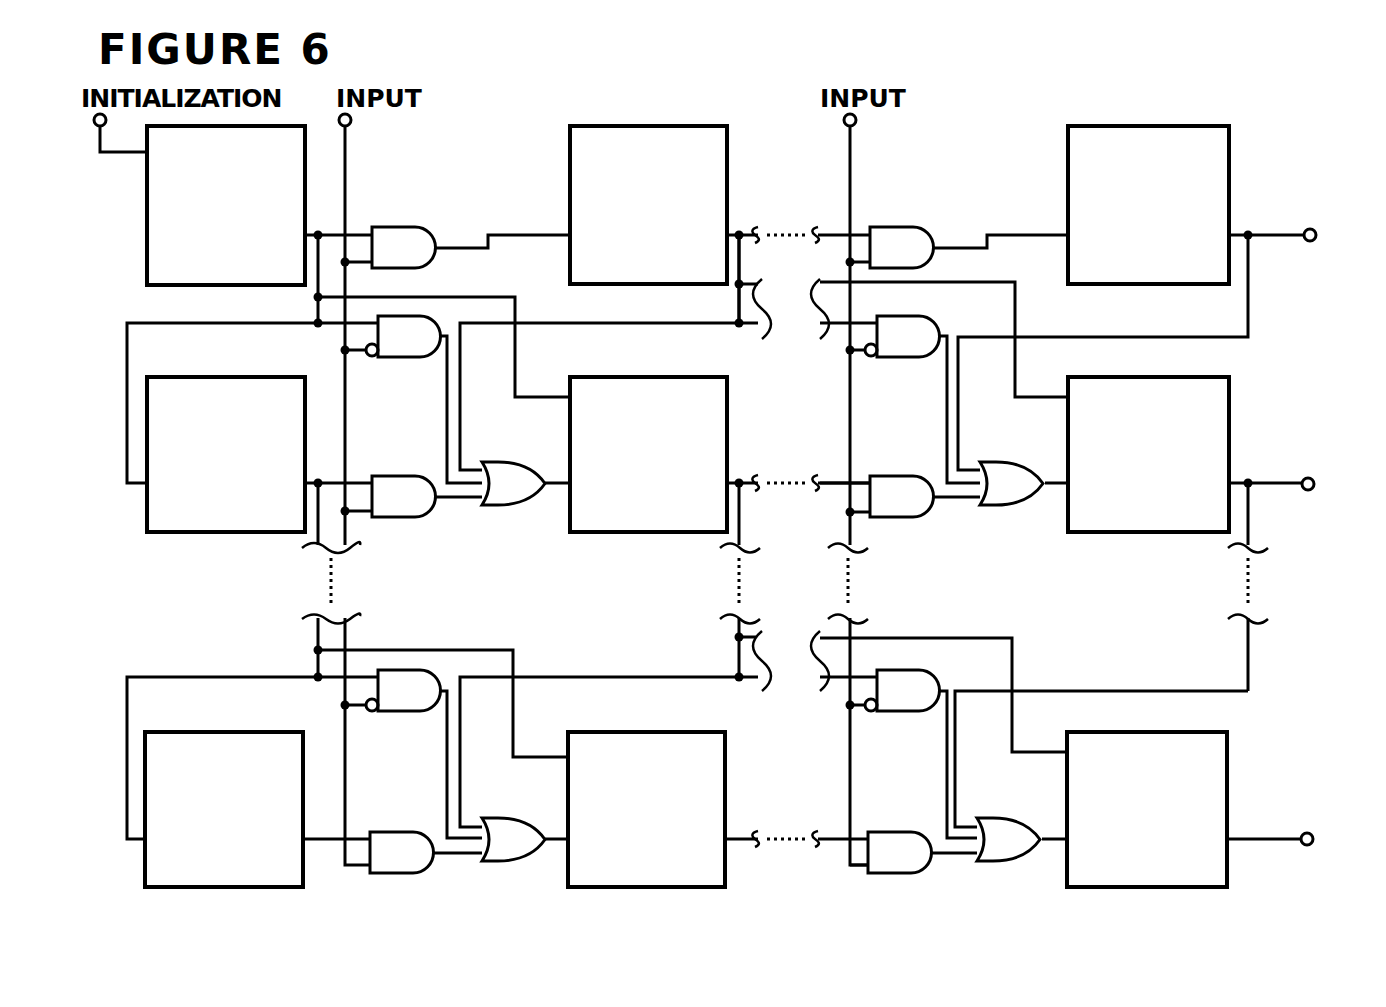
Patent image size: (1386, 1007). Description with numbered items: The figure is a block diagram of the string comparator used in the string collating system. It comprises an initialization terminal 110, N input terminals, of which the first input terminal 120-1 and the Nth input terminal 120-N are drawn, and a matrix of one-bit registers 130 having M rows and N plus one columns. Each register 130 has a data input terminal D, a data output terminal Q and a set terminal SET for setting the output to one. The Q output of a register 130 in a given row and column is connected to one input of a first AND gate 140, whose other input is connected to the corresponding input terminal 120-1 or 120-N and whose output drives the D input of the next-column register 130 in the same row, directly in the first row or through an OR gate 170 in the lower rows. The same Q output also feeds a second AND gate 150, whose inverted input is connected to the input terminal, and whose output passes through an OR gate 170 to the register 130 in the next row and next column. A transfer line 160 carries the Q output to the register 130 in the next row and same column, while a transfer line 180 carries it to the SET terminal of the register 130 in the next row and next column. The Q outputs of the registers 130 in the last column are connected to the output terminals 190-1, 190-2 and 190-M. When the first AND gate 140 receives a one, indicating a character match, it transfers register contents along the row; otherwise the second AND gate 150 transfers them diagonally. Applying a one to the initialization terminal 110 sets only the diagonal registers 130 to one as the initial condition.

The initialization terminal 110 is at (117, 155).
The input terminal 120-1 is at (345, 158).
The input terminal 120-N is at (850, 158).
The one-bit register 130 is at (147, 258).
The first AND gate 140 is at (404, 226).
The second AND gate 150 is at (397, 359).
The transfer line 160 is at (230, 323).
The OR gate 170 is at (504, 464).
The transfer line 180 is at (448, 298).
The output terminal 190-1 is at (1270, 230).
The output terminal 190-2 is at (1270, 480).
The output terminal 190-M is at (1270, 835).